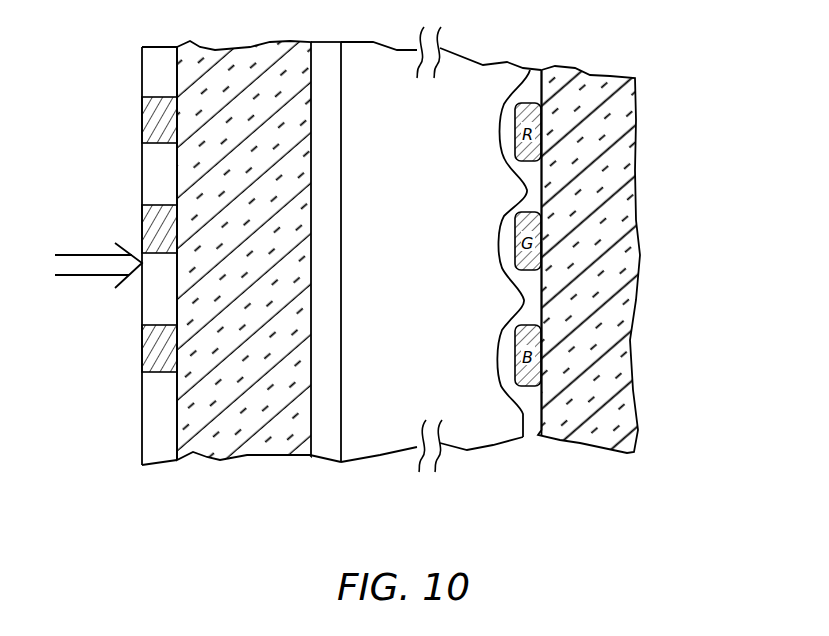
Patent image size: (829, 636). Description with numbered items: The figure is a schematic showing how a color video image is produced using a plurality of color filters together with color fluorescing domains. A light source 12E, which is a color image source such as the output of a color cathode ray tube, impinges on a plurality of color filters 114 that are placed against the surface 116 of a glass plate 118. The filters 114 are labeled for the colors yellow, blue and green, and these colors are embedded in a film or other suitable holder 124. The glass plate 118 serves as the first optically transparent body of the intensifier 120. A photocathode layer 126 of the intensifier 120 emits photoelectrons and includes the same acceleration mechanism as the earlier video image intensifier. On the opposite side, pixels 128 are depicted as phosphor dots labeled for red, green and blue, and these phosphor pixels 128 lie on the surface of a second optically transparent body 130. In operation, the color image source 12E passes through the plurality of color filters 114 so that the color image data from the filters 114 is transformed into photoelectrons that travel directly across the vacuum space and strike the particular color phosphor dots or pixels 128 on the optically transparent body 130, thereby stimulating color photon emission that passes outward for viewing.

The plurality of color filters 114 is at (89, 258).
The surface 116 is at (141, 280).
The glass plate 118 is at (244, 274).
The intensifier 120 is at (432, 472).
The film or other suitable holder 124 is at (181, 232).
The photocathode layer 126 is at (347, 280).
The pixels 128 is at (441, 43).
The second optically transparent body 130 is at (620, 259).
The light source 12E is at (84, 283).